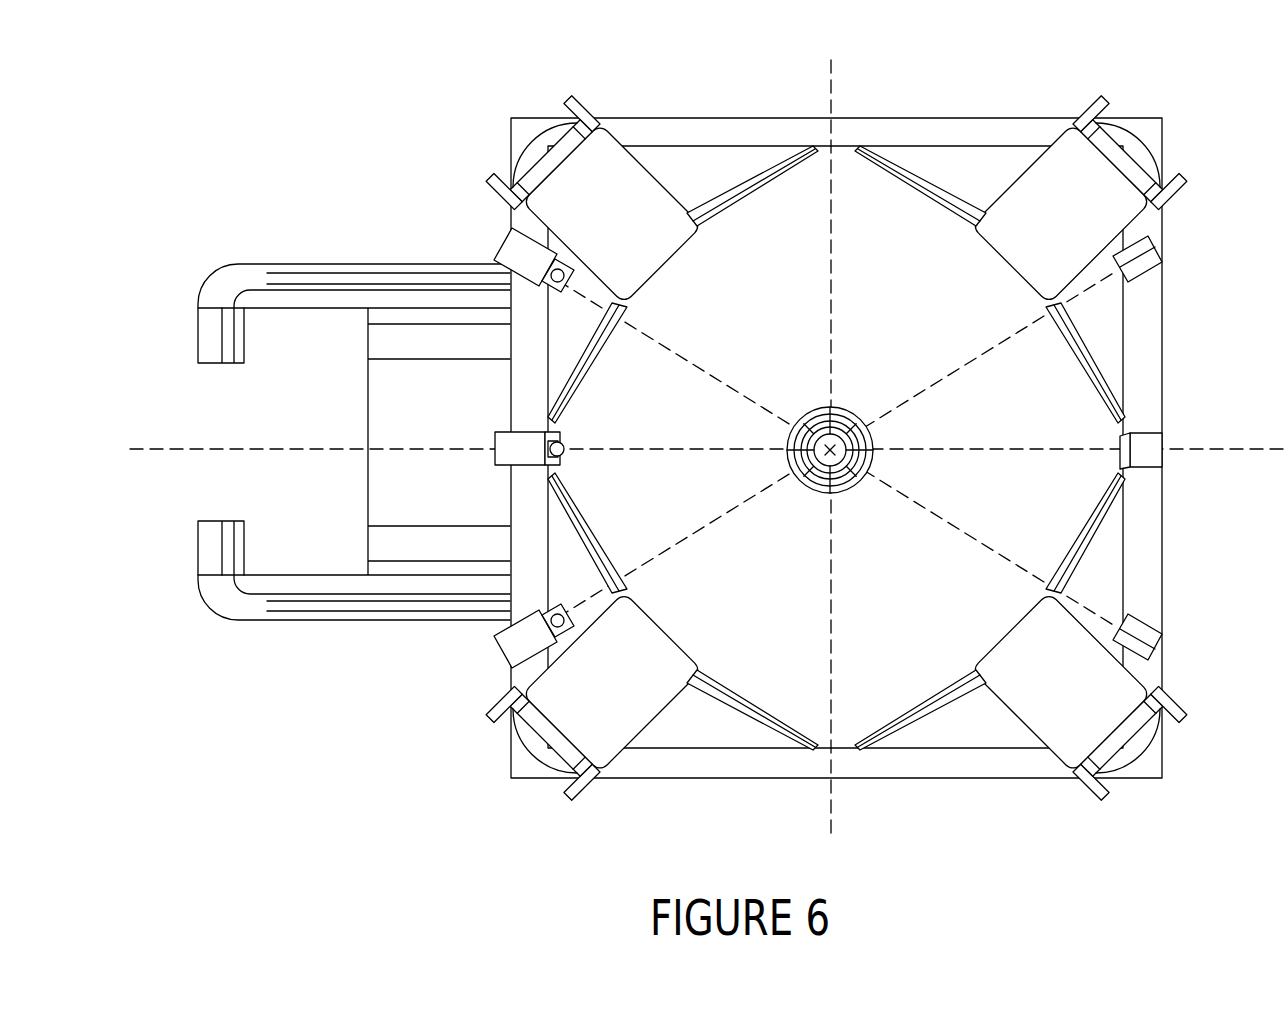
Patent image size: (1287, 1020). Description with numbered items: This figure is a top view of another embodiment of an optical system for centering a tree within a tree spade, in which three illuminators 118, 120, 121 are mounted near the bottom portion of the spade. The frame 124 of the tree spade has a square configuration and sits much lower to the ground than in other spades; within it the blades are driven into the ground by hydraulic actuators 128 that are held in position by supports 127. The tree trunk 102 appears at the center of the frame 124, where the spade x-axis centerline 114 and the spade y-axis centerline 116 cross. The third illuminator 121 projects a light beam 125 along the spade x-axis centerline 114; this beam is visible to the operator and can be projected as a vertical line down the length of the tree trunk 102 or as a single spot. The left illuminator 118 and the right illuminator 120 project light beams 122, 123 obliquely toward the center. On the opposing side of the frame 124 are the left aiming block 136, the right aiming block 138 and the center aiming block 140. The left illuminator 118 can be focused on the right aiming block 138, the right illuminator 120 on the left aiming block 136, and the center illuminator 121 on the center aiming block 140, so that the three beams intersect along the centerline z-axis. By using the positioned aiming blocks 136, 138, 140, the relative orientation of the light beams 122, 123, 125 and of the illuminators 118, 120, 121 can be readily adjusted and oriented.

The tree trunk 102 is at (852, 412).
The spade x-axis centerline 114 is at (150, 428).
The spade y-axis centerline 116 is at (832, 100).
The illuminator 118 is at (500, 240).
The illuminator 120 is at (495, 650).
The third illuminator 121 is at (493, 455).
The light beam 122 is at (728, 387).
The light beam 123 is at (664, 560).
The frame 124 is at (932, 118).
The light beam 125 is at (688, 455).
The support 127 is at (1025, 727).
The hydraulic actuator 128 is at (1132, 144).
The left aiming block 136 is at (1153, 243).
The right aiming block 138 is at (1155, 613).
The center aiming block 140 is at (1160, 457).